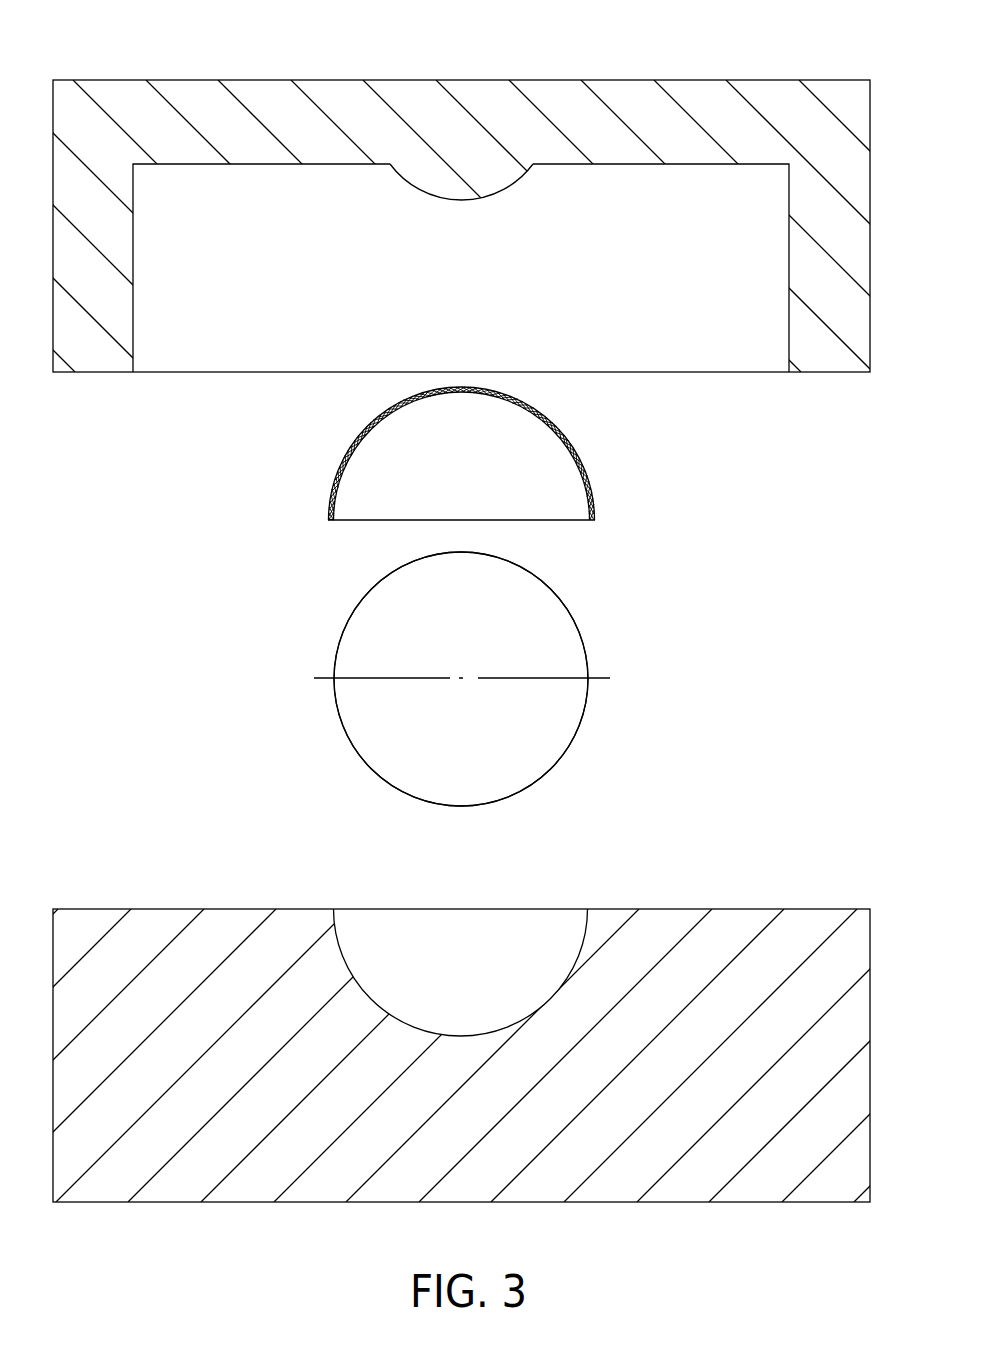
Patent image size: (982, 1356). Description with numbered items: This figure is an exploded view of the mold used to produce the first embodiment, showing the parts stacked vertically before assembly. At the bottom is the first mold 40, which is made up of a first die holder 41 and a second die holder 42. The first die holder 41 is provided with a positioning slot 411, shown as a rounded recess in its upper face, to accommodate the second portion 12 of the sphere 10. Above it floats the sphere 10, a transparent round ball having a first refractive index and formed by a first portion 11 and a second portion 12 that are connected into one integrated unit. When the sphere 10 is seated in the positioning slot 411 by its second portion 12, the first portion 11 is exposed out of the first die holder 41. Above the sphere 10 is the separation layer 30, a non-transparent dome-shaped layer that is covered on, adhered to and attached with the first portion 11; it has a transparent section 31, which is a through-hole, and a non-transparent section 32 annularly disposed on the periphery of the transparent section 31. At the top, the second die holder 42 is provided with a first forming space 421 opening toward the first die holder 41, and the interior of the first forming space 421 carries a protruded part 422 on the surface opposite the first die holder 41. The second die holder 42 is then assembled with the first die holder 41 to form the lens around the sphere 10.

The sphere 10 is at (462, 679).
The first portion 11 is at (565, 606).
The second portion 12 is at (560, 757).
The separation layer 30 is at (427, 453).
The transparent section 31 is at (520, 403).
The non-transparent section 32 is at (575, 452).
The first mold 40 is at (491, 1000).
The first die holder 41 is at (773, 928).
The positioning slot 411 is at (547, 943).
The second die holder 42 is at (491, 222).
The first forming space 421 is at (670, 310).
The protruded part 422 is at (413, 190).